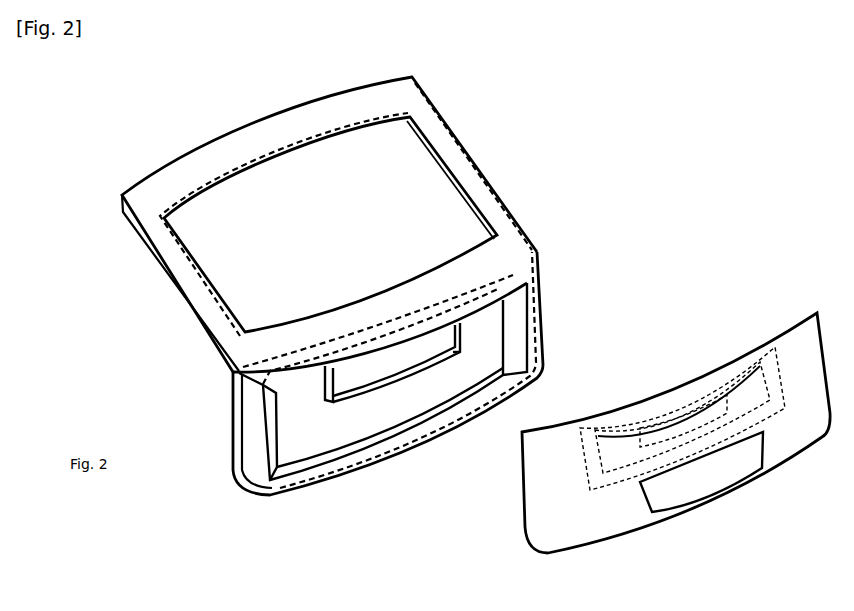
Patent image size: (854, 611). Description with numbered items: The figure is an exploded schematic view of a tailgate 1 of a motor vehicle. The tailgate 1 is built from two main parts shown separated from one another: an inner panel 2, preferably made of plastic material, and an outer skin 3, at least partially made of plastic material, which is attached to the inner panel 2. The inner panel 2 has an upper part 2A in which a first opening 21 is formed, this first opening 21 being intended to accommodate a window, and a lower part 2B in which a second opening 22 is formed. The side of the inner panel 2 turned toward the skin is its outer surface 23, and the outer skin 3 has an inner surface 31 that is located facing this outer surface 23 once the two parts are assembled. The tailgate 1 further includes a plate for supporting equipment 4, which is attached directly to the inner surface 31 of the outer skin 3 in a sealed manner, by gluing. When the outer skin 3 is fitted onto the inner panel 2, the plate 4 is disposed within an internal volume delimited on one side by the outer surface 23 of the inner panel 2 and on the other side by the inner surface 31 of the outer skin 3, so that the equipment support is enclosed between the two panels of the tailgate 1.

The tailgate 1 is at (85, 124).
The inner panel 2 is at (207, 338).
The upper part 2A is at (159, 292).
The lower part 2B is at (229, 444).
The first opening 21 is at (427, 172).
The second opening 22 is at (449, 342).
The outer surface 23 is at (541, 283).
The outer skin 3 is at (526, 517).
The inner surface 31 is at (514, 457).
The plate for supporting equipment 4 is at (589, 423).